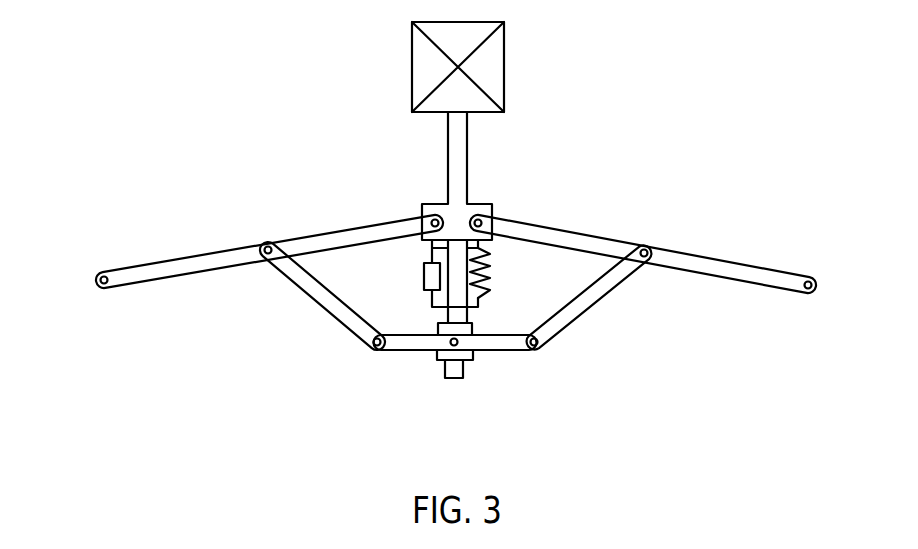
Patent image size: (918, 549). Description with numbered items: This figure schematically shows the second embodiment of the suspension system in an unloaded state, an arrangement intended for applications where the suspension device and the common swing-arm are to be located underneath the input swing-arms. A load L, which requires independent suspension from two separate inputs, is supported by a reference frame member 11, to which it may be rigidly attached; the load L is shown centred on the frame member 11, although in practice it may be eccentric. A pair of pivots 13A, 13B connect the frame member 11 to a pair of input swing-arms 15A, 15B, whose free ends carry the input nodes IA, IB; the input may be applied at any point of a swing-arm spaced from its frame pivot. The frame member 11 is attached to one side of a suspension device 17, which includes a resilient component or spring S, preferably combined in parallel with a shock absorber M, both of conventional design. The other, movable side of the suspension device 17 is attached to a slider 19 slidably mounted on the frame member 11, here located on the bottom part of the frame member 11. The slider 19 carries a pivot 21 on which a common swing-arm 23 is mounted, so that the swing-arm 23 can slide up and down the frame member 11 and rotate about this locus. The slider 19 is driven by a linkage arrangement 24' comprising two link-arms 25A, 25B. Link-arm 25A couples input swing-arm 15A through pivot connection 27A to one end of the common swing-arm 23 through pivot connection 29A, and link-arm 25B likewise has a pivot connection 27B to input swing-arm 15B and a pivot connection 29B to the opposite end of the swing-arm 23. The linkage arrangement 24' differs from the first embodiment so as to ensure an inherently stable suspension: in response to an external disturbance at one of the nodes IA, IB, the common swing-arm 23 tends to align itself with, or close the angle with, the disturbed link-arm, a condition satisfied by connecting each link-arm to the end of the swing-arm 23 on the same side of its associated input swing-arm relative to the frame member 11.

The load L is at (486, 72).
The suspension device 17 is at (368, 267).
The shock absorber M is at (424, 281).
The spring S is at (487, 282).
The input swing-arm 15A is at (228, 253).
The input swing-arm 15B is at (680, 258).
The link-arm 25A is at (323, 308).
The link-arm 25B is at (578, 307).
The common swing-arm 23 is at (422, 340).
The pivot 13A is at (425, 215).
The pivot 13B is at (486, 214).
The pivot connection 27A is at (266, 243).
The pivot connection 27B is at (646, 247).
The pivot connection 29A is at (368, 350).
The pivot connection 29B is at (538, 347).
The pivot 21 is at (468, 352).
The slider 19 is at (467, 357).
The reference frame member 11 is at (453, 372).
The input node IA is at (97, 278).
The input node IB is at (820, 283).
The linkage arrangement 24' is at (768, 411).